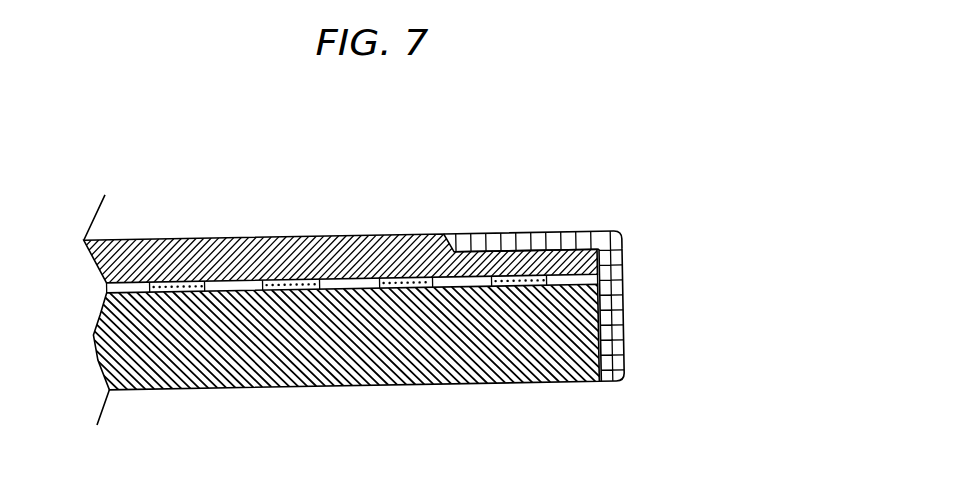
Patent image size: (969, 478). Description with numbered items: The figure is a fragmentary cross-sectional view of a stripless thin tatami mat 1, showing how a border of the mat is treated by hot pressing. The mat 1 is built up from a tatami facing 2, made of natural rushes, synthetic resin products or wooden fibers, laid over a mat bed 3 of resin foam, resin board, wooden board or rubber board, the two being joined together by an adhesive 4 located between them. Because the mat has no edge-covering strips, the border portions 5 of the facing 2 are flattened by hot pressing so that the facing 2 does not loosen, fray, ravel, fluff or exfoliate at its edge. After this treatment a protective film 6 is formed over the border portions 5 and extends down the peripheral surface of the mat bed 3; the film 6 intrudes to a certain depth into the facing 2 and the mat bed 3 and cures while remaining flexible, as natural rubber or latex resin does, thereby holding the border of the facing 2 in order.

The stripless thin tatami mat 1 is at (233, 196).
The tatami facing 2 is at (295, 238).
The mat bed 3 is at (402, 358).
The adhesive 4 is at (168, 293).
The border portions 5 is at (570, 243).
The protective film 6 is at (612, 293).